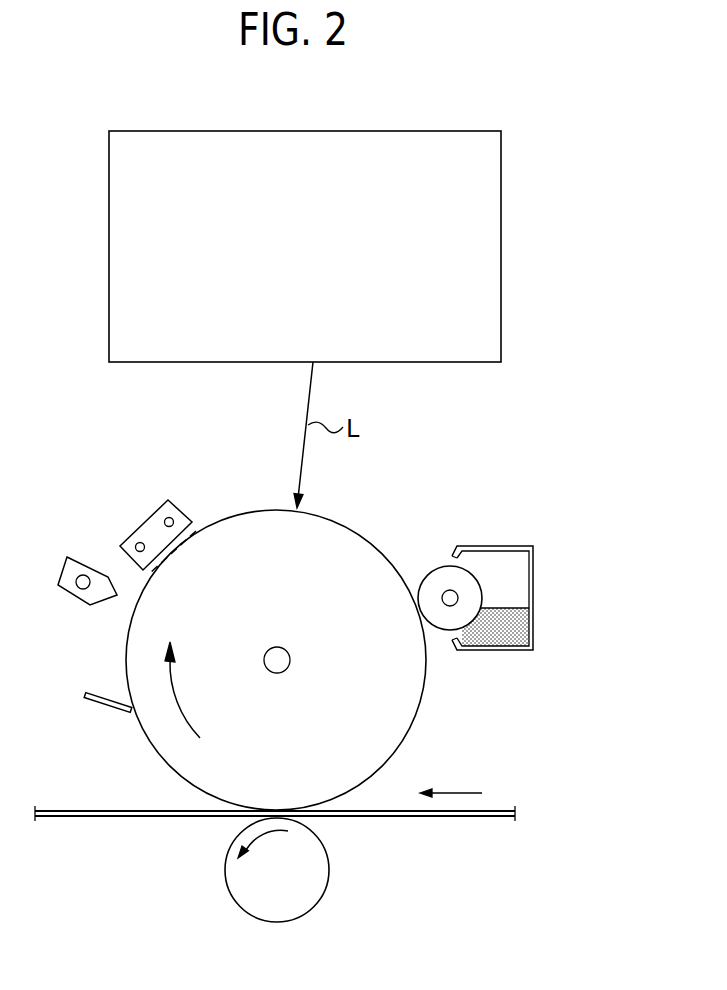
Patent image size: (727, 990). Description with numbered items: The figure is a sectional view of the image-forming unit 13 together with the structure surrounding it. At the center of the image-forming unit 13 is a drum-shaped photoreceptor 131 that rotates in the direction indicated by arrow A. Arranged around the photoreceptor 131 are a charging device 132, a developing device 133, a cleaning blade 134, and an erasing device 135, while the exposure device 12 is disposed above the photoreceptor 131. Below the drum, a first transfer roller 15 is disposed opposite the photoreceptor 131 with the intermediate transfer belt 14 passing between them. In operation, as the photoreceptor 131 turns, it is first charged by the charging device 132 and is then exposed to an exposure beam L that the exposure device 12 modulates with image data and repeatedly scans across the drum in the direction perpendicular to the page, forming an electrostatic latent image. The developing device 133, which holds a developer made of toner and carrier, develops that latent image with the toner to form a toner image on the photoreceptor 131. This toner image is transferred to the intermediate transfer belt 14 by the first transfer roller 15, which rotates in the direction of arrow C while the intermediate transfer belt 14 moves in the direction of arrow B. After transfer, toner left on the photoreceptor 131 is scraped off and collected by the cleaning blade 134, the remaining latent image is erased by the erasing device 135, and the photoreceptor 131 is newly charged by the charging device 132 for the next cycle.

The exposure device 12 is at (491, 266).
The image-forming unit 13 is at (452, 465).
The photoreceptor 131 is at (422, 680).
The charging device 132 is at (142, 526).
The developing device 133 is at (524, 530).
The cleaning blade 134 is at (108, 712).
The erasing device 135 is at (66, 570).
The intermediate transfer belt 14 is at (472, 818).
The first transfer roller 15 is at (322, 870).